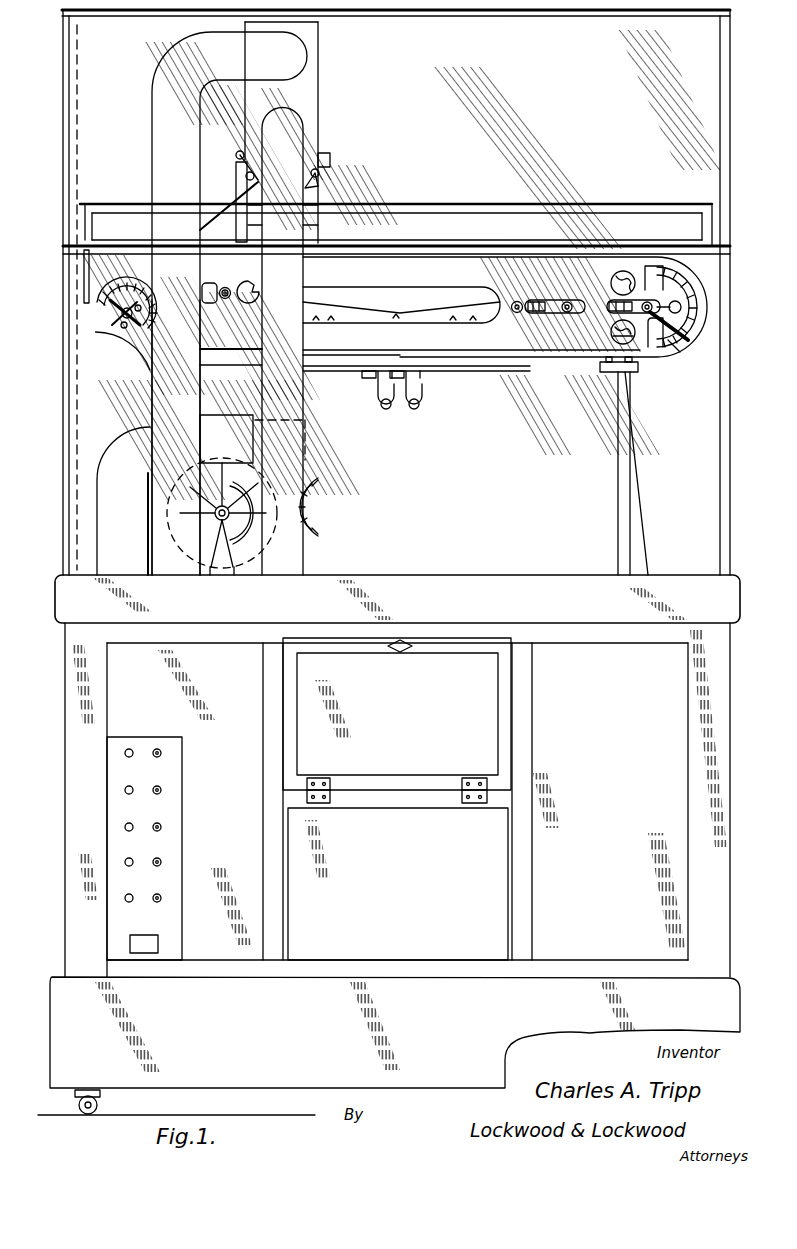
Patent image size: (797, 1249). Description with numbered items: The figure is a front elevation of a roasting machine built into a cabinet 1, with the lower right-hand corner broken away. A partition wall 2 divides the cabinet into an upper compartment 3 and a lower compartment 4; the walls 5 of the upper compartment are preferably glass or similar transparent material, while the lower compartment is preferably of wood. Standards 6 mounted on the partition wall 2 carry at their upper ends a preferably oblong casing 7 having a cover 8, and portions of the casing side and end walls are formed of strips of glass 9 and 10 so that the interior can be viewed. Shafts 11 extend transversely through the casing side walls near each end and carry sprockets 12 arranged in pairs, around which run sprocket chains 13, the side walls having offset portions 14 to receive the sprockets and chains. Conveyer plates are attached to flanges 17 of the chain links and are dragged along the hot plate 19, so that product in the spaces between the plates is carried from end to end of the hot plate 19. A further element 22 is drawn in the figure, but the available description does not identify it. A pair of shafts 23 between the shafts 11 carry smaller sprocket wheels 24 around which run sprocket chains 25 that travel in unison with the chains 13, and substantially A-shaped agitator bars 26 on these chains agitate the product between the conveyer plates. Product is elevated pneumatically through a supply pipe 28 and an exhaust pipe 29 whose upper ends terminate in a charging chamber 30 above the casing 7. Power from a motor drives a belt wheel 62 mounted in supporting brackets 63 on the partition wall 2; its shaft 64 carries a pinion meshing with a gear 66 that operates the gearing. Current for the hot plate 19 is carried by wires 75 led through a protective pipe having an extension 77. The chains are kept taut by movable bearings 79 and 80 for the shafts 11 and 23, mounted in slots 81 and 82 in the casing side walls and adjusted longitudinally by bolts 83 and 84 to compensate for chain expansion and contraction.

The cabinet 1 is at (397, 800).
The partition wall 2 is at (467, 540).
The upper compartment 3 is at (98, 22).
The lower compartment 4 is at (397, 799).
The walls of the upper compartment 5 is at (83, 466).
The standards 6 is at (636, 506).
The casing 7 is at (401, 295).
The cover 8 is at (435, 202).
The strips of glass 9 is at (469, 228).
The strips of glass 10 is at (83, 228).
The shafts 11 is at (659, 329).
The sprockets 12 is at (696, 300).
The sprocket chains 13 is at (673, 300).
The offset portions 14 is at (118, 345).
The flanges 17 is at (678, 348).
The hot plate 19 is at (432, 308).
The box 22 is at (250, 418).
The shafts 23 is at (225, 300).
The sprocket wheels 24 is at (246, 276).
The sprocket chains 25 is at (220, 274).
The agitator bars 26 is at (477, 325).
The supply pipe 28 is at (282, 341).
The exhaust pipe 29 is at (207, 437).
The charging chamber 30 is at (316, 88).
The belt wheel 62 is at (250, 568).
The supporting brackets 63 is at (214, 536).
The shaft 64 is at (214, 514).
The gear 66 is at (312, 500).
The wires 75 is at (424, 388).
The extension 77 is at (420, 406).
The movable bearing 79 is at (638, 300).
The movable bearing 80 is at (543, 327).
The slot 81 is at (661, 358).
The slot 82 is at (624, 281).
The bolt 83 is at (614, 318).
The bolt 84 is at (536, 300).